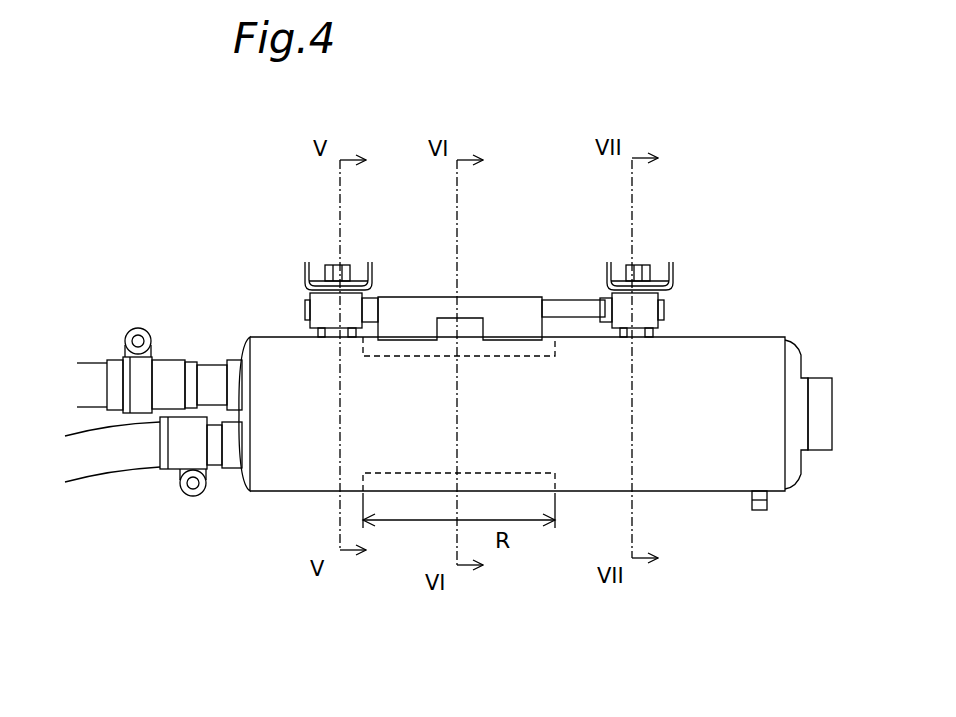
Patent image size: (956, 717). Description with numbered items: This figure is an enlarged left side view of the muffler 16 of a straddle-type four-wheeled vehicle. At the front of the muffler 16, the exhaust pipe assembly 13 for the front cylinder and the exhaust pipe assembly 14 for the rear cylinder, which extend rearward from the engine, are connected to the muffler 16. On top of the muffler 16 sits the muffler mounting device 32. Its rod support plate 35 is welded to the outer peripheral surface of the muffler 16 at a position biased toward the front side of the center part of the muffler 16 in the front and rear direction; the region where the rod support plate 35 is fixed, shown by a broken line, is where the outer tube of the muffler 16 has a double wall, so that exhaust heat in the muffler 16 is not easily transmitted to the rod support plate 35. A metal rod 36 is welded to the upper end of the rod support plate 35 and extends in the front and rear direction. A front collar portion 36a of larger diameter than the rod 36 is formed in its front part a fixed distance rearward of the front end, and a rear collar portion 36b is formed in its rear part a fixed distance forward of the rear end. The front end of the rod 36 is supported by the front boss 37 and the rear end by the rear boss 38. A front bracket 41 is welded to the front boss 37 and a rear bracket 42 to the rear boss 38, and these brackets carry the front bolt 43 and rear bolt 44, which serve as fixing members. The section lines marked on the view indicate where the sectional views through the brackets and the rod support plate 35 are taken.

The exhaust pipe assembly 13 is at (75, 356).
The exhaust pipe assembly 14 is at (92, 476).
The muffler 16 is at (663, 478).
The muffler mounting device 32 is at (487, 222).
The rod support plate 35 is at (472, 297).
The rod 36 is at (548, 300).
The front collar portion 36a is at (375, 292).
The rear collar portion 36b is at (600, 298).
The front boss 37 is at (326, 318).
The rear boss 38 is at (642, 325).
The front bracket 41 is at (285, 244).
The rear bracket 42 is at (671, 263).
The front bolt 43 is at (333, 265).
The rear bolt 44 is at (645, 268).